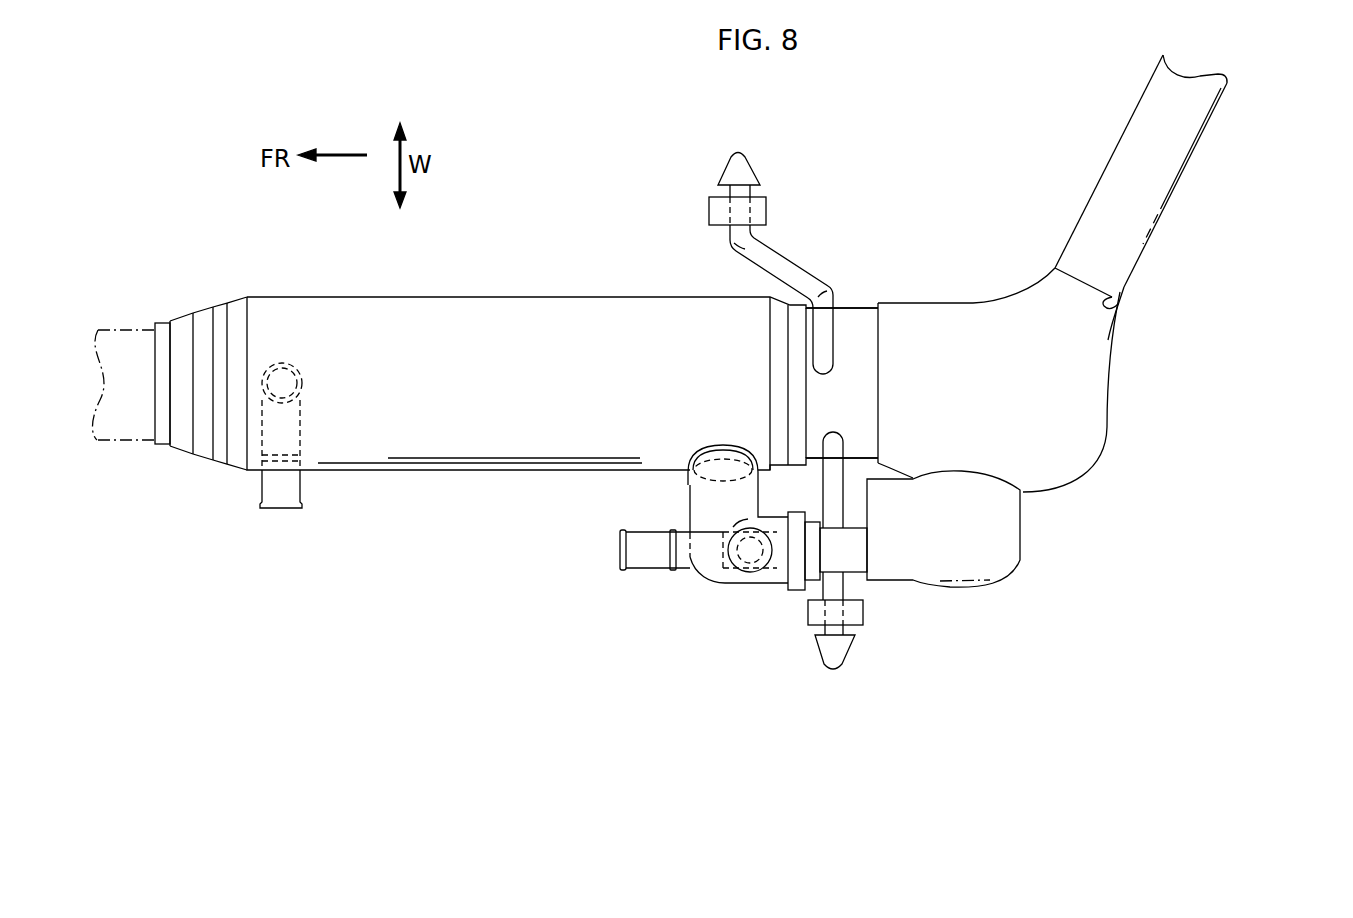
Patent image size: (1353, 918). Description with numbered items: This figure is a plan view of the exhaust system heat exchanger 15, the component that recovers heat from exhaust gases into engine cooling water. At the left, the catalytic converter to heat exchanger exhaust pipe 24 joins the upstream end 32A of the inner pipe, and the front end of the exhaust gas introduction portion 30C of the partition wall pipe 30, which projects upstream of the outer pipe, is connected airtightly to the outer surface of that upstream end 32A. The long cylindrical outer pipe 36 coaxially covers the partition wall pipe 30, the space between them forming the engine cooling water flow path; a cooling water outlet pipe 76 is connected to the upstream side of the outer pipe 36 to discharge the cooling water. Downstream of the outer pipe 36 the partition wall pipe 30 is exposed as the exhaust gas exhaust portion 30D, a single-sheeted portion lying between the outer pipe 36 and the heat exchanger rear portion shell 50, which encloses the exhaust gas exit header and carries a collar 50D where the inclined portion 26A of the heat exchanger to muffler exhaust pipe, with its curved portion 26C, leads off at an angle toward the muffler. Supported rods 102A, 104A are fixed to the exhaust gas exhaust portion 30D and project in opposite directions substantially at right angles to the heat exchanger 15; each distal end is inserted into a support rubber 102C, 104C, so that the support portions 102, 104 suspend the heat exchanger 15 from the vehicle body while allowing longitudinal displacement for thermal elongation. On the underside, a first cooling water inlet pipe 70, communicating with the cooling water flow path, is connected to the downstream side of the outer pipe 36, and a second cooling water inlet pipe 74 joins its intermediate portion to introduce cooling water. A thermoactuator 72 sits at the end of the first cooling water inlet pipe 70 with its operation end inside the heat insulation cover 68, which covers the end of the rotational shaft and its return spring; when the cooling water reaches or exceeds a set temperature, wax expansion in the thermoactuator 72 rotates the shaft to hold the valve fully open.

The exhaust system heat exchanger 15 is at (592, 123).
The catalytic converter to heat exchanger exhaust pipe 24 is at (118, 332).
The upstream end of inner pipe 32A is at (155, 446).
The exhaust gas introduction portion 30C is at (183, 448).
The partition wall pipe 30 is at (820, 388).
The cooling water outlet pipe 76 is at (291, 487).
The outer pipe 36 is at (476, 459).
The support portion 104 is at (740, 145).
The support rubber 104C is at (761, 207).
The supported rod 104A is at (775, 265).
The exhaust gas exhaust portion 30D is at (853, 310).
The heat exchanger rear portion shell 50 is at (960, 320).
The collar of outlet housing 50D is at (1113, 295).
The curved portion of outlet pipe 26C is at (1112, 315).
The inclined portion 26A is at (1184, 166).
The heat insulation cover 68 is at (973, 581).
The thermoactuator 72 is at (848, 552).
The support portion 102 is at (832, 672).
The support rubber 102C is at (860, 616).
The supported rod 102A is at (845, 651).
The first cooling water inlet pipe 70 is at (765, 584).
The second cooling water inlet pipe 74 is at (645, 558).